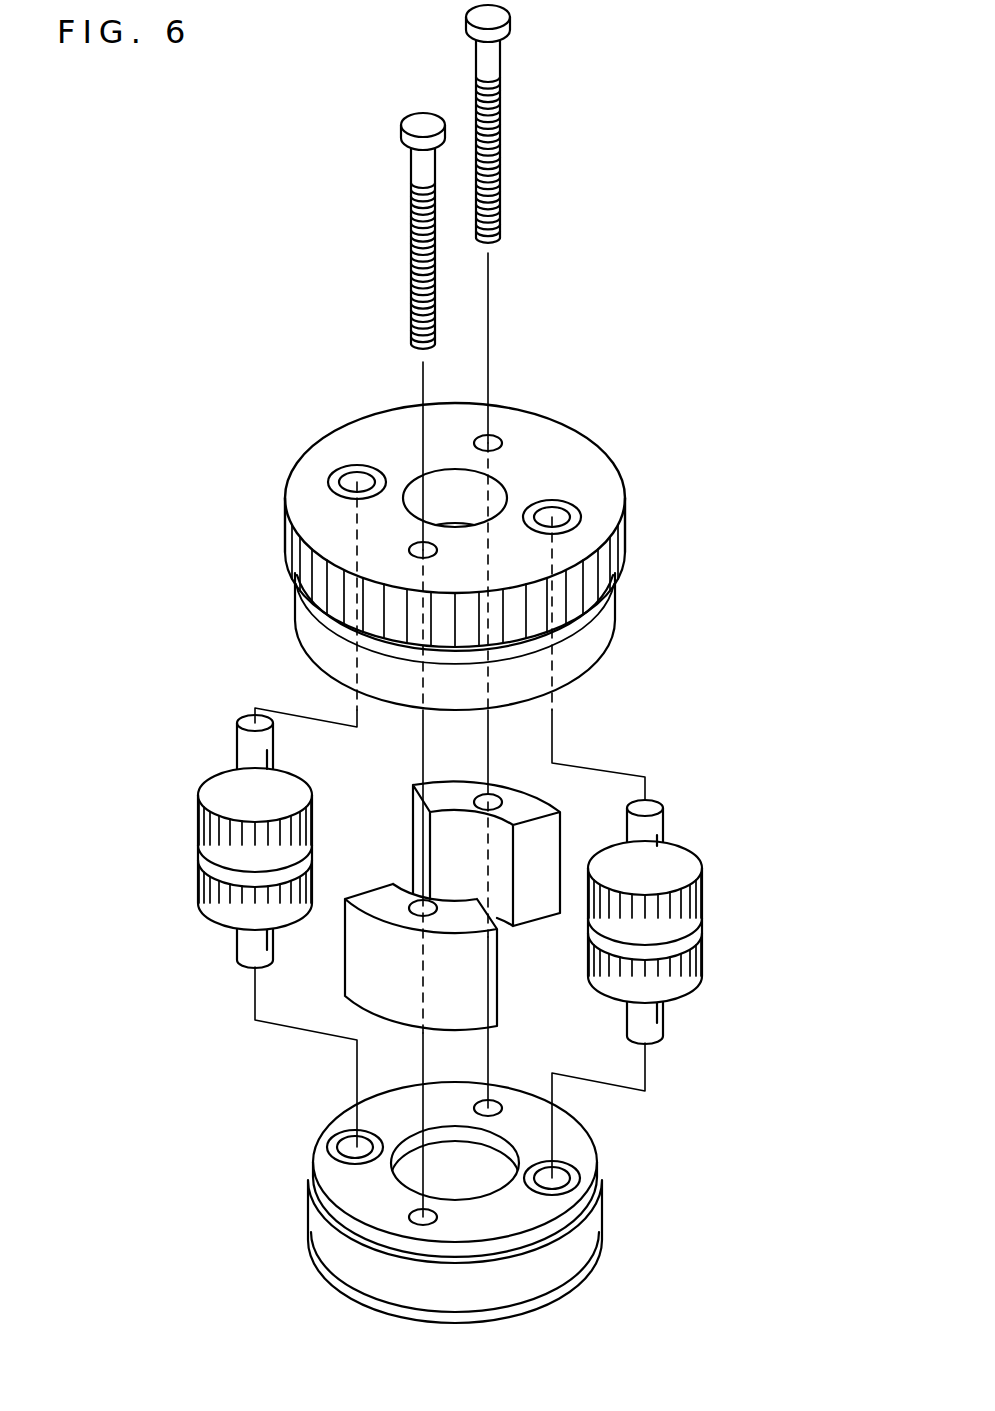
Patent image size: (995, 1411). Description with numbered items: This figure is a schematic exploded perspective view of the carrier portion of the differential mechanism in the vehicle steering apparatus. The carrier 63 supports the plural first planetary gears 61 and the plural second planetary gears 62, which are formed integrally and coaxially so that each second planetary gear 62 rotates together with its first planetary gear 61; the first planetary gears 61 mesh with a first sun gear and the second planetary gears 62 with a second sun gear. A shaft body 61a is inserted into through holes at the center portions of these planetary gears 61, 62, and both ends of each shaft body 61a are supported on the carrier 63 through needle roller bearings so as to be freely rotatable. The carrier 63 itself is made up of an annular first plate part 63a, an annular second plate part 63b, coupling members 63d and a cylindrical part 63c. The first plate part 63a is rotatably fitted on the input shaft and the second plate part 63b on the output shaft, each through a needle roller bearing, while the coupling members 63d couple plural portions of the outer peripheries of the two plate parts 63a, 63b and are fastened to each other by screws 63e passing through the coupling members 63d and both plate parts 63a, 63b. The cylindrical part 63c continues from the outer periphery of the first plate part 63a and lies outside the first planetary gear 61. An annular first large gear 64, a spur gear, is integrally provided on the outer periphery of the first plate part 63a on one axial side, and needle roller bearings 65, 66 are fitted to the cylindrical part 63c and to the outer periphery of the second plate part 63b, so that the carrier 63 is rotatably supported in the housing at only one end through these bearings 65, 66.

The first planetary gear 61 is at (200, 825).
The shaft body 61a is at (237, 750).
The second planetary gear 62 is at (200, 872).
The carrier 63 is at (557, 421).
The first plate part 63a is at (607, 487).
The second plate part 63b is at (588, 1203).
The cylindrical part 63c is at (617, 597).
The coupling member 63d is at (413, 822).
The screw 63e is at (510, 27).
The first large gear 64 is at (618, 552).
The needle roller bearing 65 is at (618, 618).
The needle roller bearing 66 is at (553, 1278).